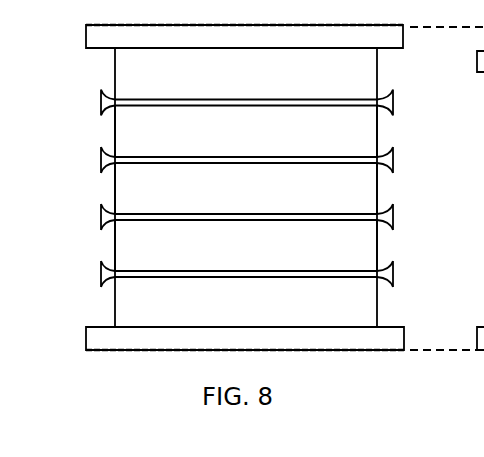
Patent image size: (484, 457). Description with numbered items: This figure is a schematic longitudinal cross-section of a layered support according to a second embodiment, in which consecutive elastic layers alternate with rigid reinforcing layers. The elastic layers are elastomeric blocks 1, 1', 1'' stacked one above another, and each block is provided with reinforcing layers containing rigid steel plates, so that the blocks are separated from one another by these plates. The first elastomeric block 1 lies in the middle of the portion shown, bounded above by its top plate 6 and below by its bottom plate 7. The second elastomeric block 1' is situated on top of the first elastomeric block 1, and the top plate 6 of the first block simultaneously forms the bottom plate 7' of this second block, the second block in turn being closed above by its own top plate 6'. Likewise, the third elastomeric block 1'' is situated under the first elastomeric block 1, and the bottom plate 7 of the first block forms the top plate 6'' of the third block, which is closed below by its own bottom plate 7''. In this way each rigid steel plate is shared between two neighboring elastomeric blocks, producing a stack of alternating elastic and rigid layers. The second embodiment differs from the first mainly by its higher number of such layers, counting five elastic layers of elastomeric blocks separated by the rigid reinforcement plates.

The elastomeric block 1 is at (246, 188).
The second elastomeric block 1' is at (246, 131).
The third elastomeric block 1'' is at (246, 245).
The top plate 6 is at (211, 131).
The top plate 6' is at (219, 72).
The top plate 6'' is at (205, 247).
The bottom plate 7 is at (205, 247).
The bottom plate 7' is at (211, 131).
The bottom plate 7'' is at (218, 305).